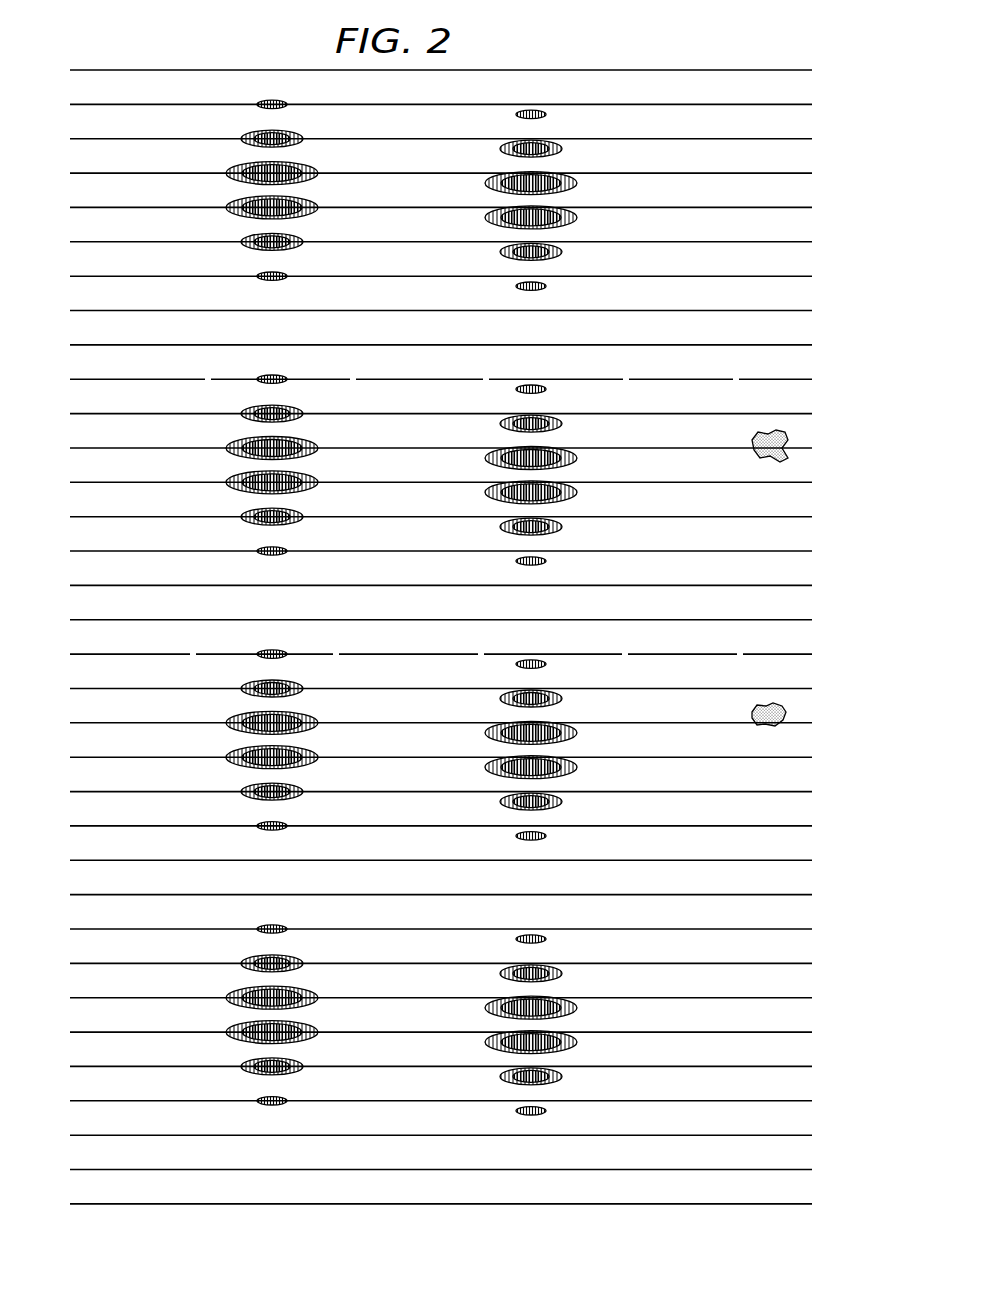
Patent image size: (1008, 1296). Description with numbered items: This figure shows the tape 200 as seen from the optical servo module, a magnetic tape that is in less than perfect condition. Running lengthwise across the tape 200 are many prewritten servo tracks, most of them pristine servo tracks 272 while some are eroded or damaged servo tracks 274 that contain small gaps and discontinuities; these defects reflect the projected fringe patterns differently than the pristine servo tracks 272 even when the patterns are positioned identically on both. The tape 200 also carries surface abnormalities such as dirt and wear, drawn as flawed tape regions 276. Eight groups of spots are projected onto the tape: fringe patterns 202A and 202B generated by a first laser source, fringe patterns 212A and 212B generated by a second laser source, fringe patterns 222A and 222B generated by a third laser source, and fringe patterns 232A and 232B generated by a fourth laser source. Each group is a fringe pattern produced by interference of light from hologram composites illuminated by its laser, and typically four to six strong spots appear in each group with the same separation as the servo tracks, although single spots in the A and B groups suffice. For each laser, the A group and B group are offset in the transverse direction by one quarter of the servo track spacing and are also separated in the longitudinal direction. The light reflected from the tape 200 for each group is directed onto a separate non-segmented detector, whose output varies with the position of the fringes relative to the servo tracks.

The tape 200 is at (570, 48).
The pristine servo tracks 272 is at (770, 70).
The damaged servo tracks 274 is at (795, 381).
The flawed tape regions 276 is at (786, 437).
The fringe pattern 202A is at (215, 157).
The fringe pattern 202B is at (588, 156).
The fringe pattern 212A is at (215, 432).
The fringe pattern 212B is at (586, 431).
The fringe pattern 222A is at (215, 707).
The fringe pattern 222B is at (586, 706).
The fringe pattern 232A is at (213, 981).
The fringe pattern 232B is at (586, 980).